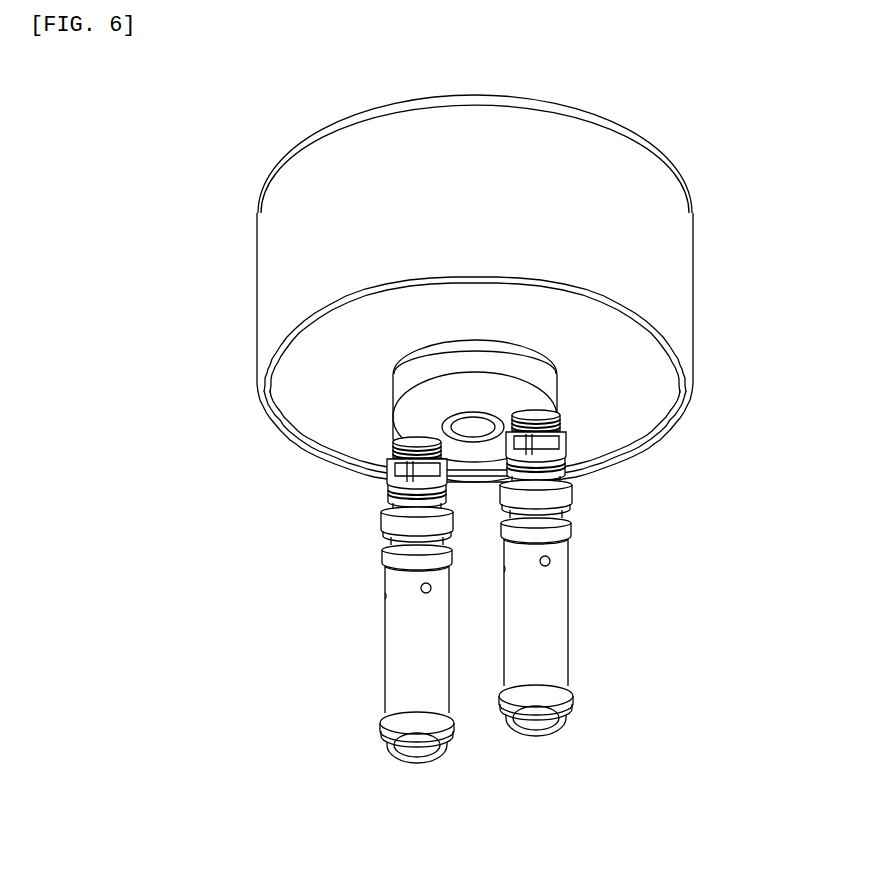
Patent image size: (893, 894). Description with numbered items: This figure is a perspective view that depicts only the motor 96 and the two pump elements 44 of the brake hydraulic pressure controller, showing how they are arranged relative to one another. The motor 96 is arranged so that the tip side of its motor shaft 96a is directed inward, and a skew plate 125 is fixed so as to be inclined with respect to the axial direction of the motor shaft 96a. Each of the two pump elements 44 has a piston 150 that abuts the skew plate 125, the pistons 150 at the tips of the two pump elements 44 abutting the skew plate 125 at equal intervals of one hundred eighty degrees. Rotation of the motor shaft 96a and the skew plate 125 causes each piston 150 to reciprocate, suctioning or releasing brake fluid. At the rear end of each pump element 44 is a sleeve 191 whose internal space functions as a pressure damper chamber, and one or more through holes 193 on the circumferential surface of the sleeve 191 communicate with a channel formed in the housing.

The motor 96 is at (675, 277).
The motor shaft 96a is at (477, 428).
The skew plate 125 is at (496, 411).
The piston 150 is at (396, 438).
The pump element 44 is at (496, 586).
The sleeve 191 is at (400, 667).
The through hole 193 is at (386, 596).